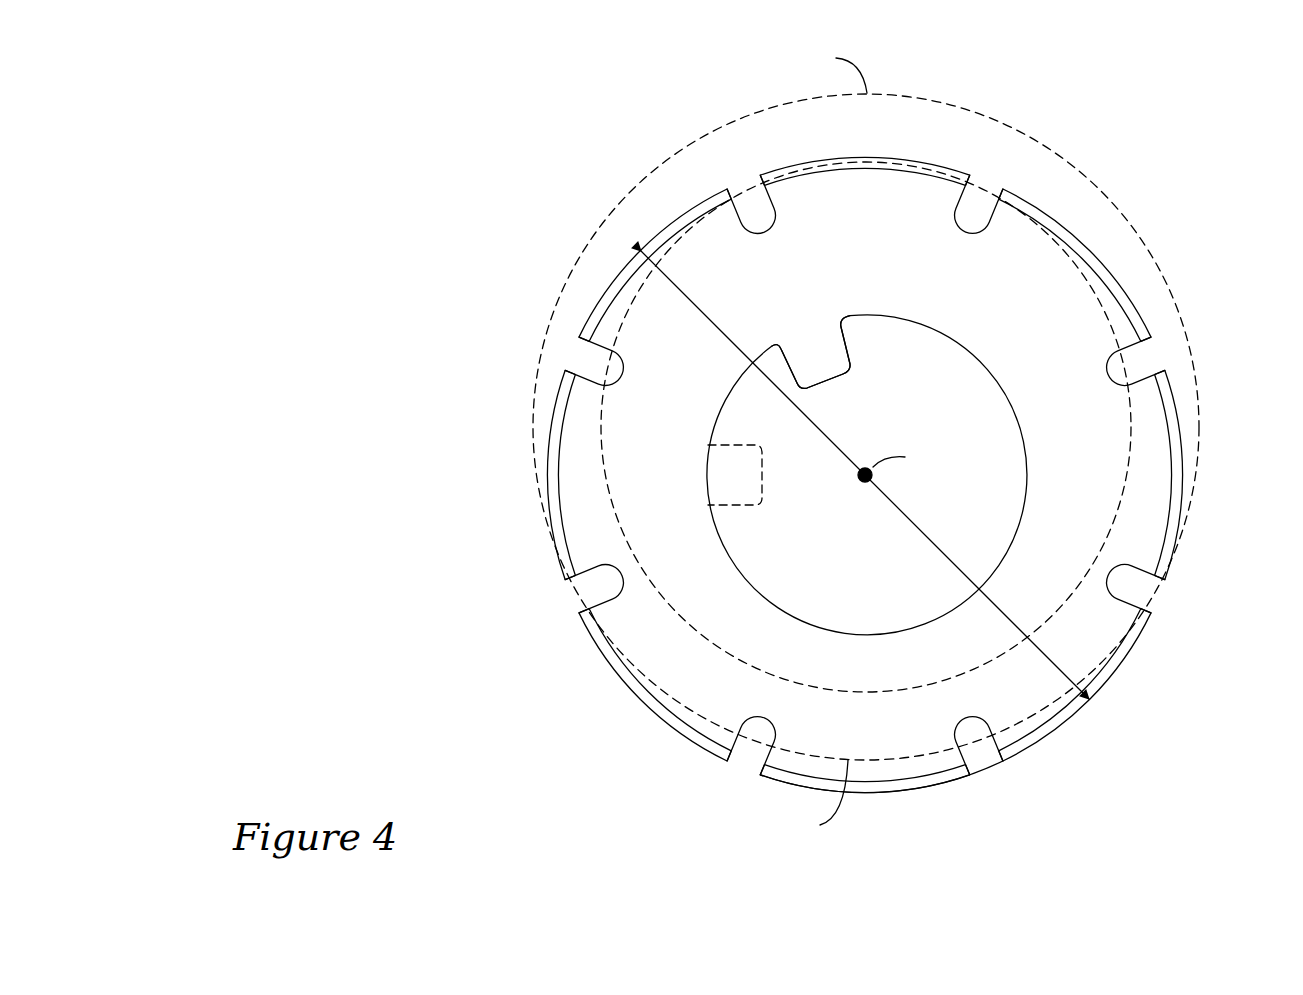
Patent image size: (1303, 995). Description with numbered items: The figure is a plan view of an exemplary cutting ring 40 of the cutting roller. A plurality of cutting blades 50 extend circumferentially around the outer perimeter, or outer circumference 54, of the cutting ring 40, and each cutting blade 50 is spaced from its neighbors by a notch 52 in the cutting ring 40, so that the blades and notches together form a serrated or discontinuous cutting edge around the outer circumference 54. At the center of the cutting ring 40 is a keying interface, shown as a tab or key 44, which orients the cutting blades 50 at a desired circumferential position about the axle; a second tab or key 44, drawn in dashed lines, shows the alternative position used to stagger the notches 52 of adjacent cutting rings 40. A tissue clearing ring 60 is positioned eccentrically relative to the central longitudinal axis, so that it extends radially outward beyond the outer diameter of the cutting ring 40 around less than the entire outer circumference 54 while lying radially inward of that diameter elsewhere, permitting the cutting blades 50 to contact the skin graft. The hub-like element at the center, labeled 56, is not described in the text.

The cutting ring 40 is at (882, 452).
The tab or key 44 is at (843, 375).
The cutting blade 50 is at (620, 272).
The notch 52 is at (992, 176).
The outer perimeter (outer circumference) 54 is at (932, 789).
The hub 56 is at (1015, 525).
The tissue clearing ring 60 is at (938, 98).